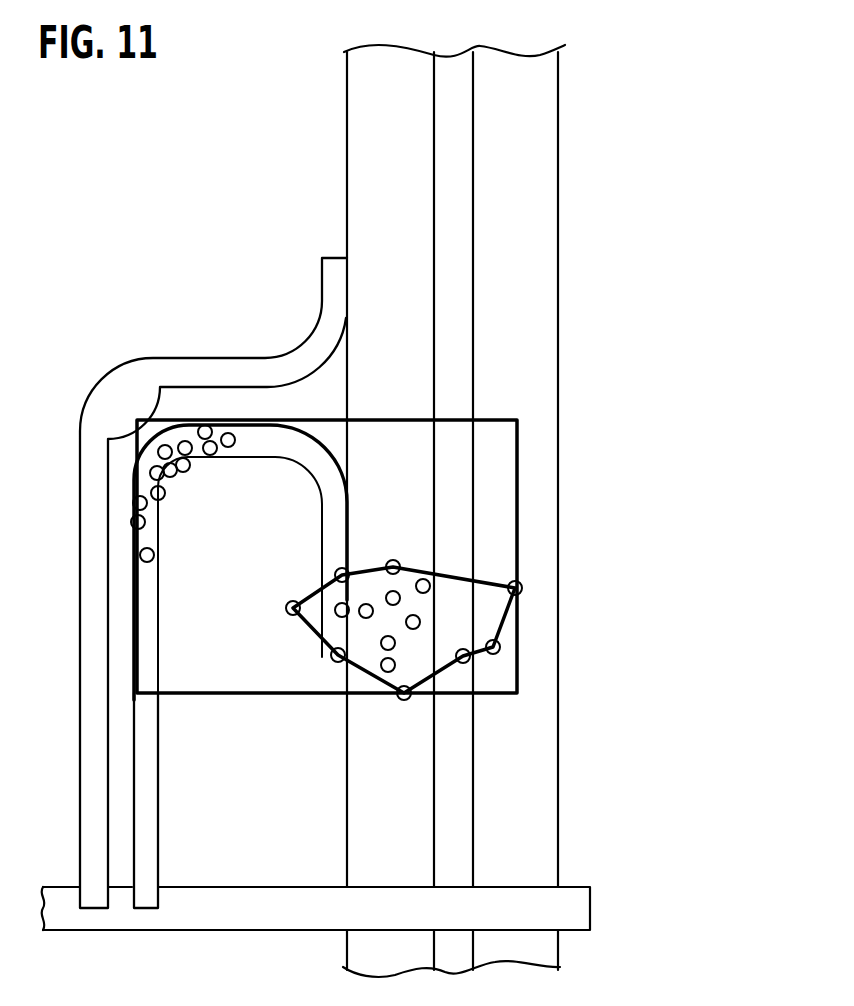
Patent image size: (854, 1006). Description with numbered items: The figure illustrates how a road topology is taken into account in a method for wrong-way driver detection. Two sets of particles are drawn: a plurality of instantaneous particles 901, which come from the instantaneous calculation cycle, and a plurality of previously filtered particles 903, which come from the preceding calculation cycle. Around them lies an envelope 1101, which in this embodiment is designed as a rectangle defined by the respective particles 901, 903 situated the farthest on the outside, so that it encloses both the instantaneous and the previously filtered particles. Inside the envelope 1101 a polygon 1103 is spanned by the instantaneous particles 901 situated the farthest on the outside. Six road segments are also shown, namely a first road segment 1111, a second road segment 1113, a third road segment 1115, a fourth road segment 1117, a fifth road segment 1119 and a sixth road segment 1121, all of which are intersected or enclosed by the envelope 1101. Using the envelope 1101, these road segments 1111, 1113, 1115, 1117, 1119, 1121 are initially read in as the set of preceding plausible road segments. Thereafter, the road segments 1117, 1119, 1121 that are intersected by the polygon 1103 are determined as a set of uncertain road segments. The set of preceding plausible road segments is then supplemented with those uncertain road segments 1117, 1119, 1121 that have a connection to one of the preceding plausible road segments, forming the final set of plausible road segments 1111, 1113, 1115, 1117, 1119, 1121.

The instantaneous particles 901 is at (487, 668).
The previously filtered particles 903 is at (195, 472).
The envelope 1101 is at (298, 695).
The polygon 1103 is at (503, 623).
The first road segment 1111 is at (147, 825).
The second road segment 1113 is at (135, 487).
The third road segment 1115 is at (320, 475).
The fourth road segment 1117 is at (328, 548).
The fifth road segment 1119 is at (410, 521).
The sixth road segment 1121 is at (533, 355).